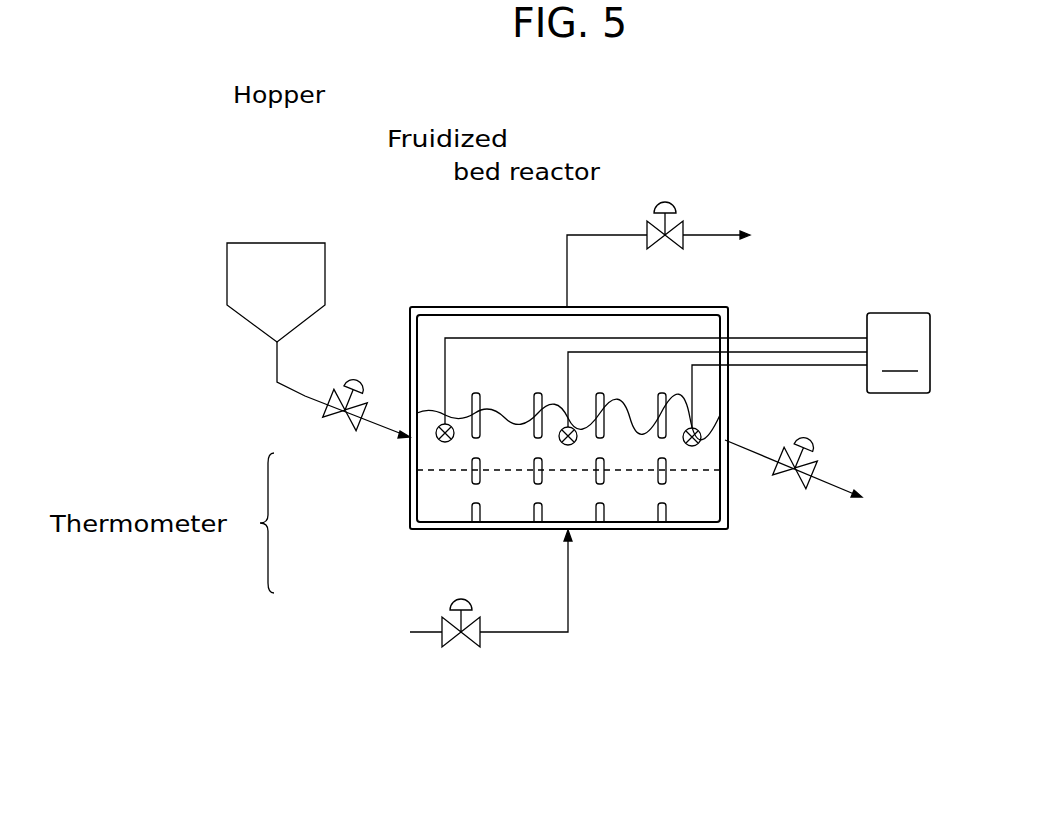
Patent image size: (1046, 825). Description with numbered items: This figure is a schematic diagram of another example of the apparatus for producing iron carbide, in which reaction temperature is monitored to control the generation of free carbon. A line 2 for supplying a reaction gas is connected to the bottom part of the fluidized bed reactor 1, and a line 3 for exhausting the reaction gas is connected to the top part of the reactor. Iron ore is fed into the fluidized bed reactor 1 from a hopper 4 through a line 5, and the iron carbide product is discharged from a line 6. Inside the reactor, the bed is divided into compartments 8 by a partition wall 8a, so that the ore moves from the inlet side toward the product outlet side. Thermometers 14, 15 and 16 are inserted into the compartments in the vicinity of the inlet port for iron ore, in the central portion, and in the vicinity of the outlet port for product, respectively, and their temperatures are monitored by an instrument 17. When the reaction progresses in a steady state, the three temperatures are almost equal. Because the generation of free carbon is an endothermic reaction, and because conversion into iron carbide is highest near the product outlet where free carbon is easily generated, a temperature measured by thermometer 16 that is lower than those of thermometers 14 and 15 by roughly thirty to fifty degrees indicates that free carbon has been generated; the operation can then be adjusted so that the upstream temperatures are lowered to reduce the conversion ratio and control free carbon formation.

The fluidized bed reactor 1 is at (502, 305).
The line for supplying a reaction gas 2 is at (513, 638).
The line for exhausting the reaction gas 3 is at (708, 232).
The hopper 4 is at (292, 242).
The line 5 is at (303, 393).
The line 6 is at (748, 455).
The compartments 8 is at (692, 512).
The partition wall 8a is at (663, 407).
The thermometer 14 is at (445, 442).
The thermometer 15 is at (568, 446).
The thermometer 16 is at (692, 447).
The instrument 17 is at (898, 353).